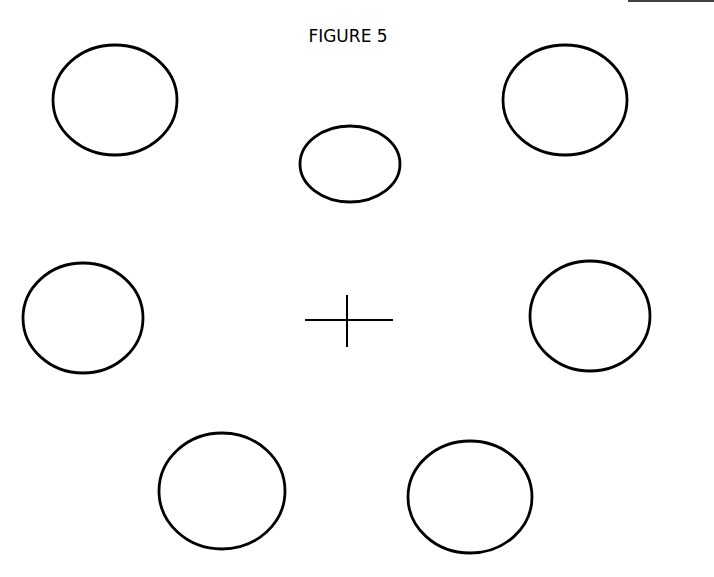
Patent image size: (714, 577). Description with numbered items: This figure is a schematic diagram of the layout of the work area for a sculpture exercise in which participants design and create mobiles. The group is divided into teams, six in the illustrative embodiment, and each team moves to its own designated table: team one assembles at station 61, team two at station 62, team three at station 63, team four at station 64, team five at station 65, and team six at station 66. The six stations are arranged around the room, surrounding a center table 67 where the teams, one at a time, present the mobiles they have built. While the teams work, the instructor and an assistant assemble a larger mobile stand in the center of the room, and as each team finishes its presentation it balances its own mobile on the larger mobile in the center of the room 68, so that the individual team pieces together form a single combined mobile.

The station 61 is at (551, 113).
The station 62 is at (570, 326).
The station 63 is at (450, 508).
The station 64 is at (220, 497).
The station 65 is at (64, 324).
The station 66 is at (94, 108).
The center table 67 is at (339, 173).
The larger mobile in the center of the room 68 is at (356, 336).